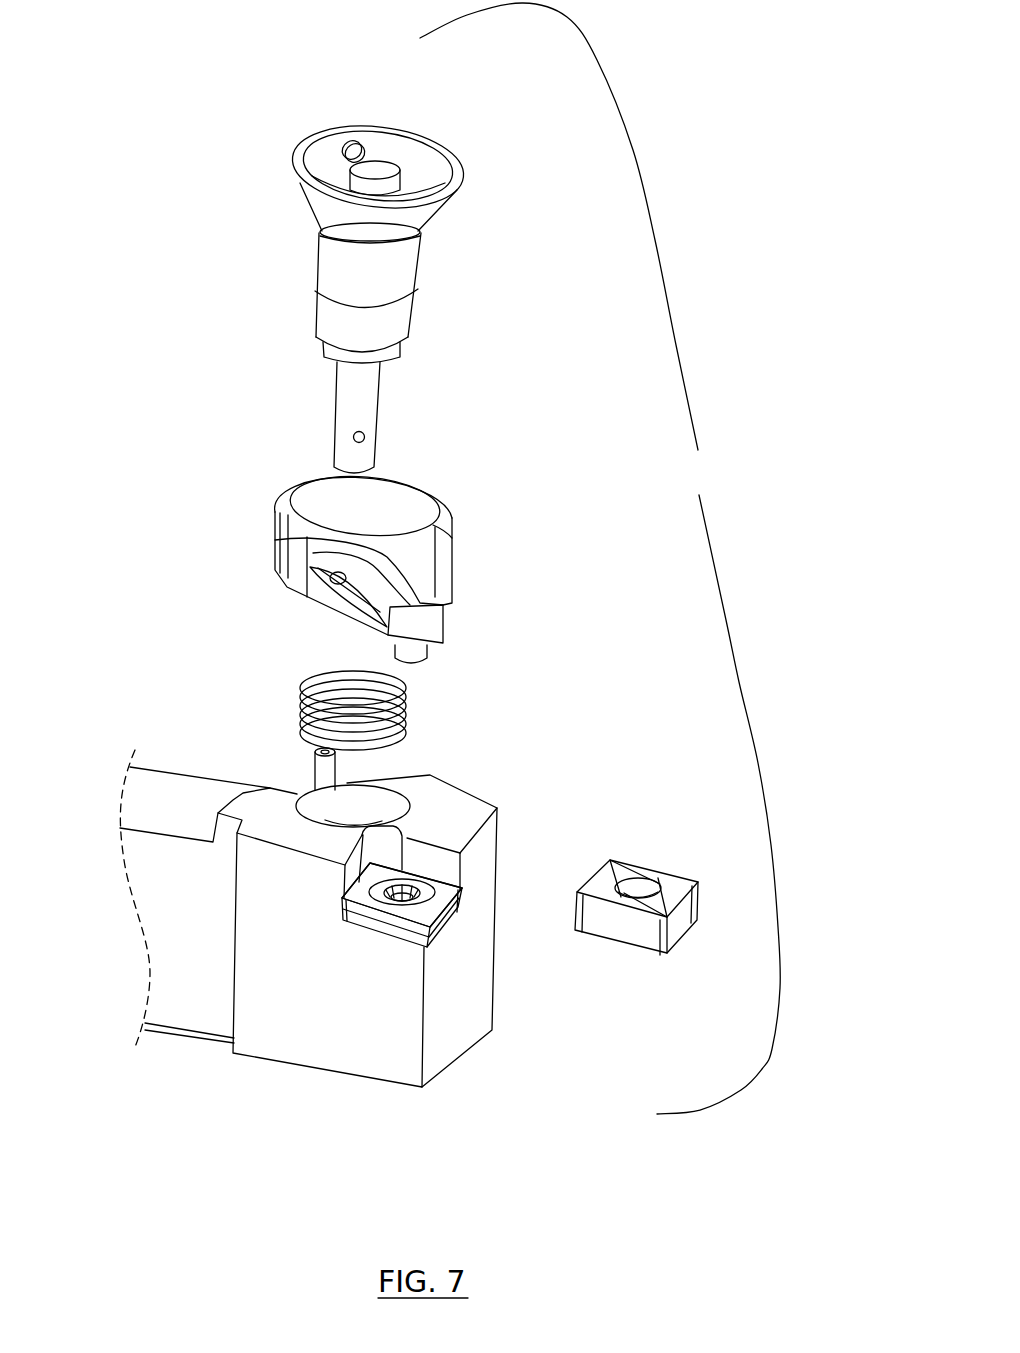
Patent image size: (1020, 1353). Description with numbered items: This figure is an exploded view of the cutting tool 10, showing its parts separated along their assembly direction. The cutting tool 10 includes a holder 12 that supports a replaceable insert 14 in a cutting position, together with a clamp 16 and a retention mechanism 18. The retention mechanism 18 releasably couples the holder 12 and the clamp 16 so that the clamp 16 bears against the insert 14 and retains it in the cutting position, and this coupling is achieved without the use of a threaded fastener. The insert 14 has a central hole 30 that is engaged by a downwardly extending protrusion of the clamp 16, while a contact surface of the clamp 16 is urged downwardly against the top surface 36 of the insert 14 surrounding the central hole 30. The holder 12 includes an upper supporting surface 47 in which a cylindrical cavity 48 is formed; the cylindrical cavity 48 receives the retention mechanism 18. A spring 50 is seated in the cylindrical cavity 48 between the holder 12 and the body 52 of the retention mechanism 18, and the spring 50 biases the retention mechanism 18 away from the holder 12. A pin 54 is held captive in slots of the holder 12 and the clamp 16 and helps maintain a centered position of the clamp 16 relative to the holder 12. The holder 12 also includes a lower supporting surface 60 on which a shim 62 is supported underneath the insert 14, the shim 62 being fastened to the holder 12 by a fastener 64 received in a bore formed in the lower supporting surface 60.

The cutting tool 10 is at (600, 558).
The holder 12 is at (349, 895).
The replaceable insert 14 is at (616, 916).
The clamp 16 is at (430, 495).
The retention mechanism 18 is at (262, 218).
The central hole 30 is at (640, 888).
The top surface 36 is at (603, 888).
The upper supporting surface 47 is at (457, 808).
The cylindrical cavity 48 is at (380, 792).
The spring 50 is at (407, 693).
The body 52 is at (340, 277).
The pin 54 is at (322, 775).
The lower supporting surface 60 is at (382, 958).
The shim 62 is at (388, 925).
The fastener 64 is at (379, 893).